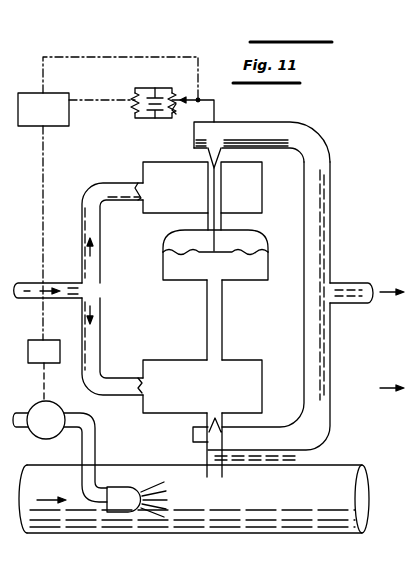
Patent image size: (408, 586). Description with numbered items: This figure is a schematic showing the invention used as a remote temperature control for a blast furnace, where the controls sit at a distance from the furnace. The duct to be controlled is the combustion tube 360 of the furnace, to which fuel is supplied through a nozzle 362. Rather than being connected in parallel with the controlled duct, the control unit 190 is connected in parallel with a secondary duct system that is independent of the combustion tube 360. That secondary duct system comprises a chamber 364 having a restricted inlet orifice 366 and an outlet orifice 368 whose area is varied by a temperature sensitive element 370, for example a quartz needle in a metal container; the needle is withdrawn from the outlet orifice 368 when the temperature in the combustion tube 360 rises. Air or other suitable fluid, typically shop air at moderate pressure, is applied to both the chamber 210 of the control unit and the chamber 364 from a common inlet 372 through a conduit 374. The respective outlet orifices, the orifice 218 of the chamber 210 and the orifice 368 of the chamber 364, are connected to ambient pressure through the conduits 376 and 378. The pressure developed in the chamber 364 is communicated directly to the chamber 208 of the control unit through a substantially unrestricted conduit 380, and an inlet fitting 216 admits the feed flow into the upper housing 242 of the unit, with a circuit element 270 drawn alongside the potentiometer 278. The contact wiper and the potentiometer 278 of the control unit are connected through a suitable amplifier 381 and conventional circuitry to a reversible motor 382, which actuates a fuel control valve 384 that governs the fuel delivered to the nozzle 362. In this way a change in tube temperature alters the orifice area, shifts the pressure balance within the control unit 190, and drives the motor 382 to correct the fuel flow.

The amplifier 381 is at (58, 93).
The potentiometer 278 is at (170, 91).
The inductor 270 is at (177, 113).
The outlet orifice 218 is at (220, 148).
The inlet fitting 216 is at (137, 180).
The upper chamber housing 242 is at (213, 197).
The control unit 190 is at (272, 230).
The chamber 210 is at (180, 243).
The chamber 208 is at (168, 270).
The conduit 374 is at (100, 256).
The common inlet 372 is at (24, 284).
The conduit 376 is at (331, 257).
The conduit 378 is at (367, 304).
The unrestricted conduit 380 is at (222, 328).
The chamber 364 is at (178, 362).
The restricted inlet orifice 366 is at (140, 377).
The outlet orifice 368 is at (196, 428).
The temperature sensitive element 370 is at (198, 464).
The reversible motor 382 is at (30, 341).
The fuel control valve 384 is at (42, 438).
The nozzle 362 is at (121, 512).
The combustion tube 360 is at (238, 534).